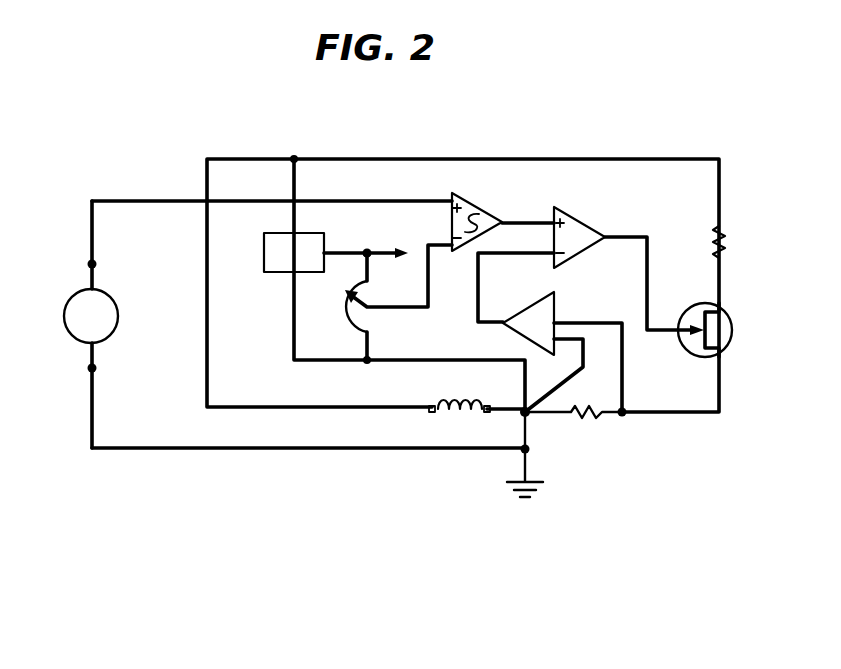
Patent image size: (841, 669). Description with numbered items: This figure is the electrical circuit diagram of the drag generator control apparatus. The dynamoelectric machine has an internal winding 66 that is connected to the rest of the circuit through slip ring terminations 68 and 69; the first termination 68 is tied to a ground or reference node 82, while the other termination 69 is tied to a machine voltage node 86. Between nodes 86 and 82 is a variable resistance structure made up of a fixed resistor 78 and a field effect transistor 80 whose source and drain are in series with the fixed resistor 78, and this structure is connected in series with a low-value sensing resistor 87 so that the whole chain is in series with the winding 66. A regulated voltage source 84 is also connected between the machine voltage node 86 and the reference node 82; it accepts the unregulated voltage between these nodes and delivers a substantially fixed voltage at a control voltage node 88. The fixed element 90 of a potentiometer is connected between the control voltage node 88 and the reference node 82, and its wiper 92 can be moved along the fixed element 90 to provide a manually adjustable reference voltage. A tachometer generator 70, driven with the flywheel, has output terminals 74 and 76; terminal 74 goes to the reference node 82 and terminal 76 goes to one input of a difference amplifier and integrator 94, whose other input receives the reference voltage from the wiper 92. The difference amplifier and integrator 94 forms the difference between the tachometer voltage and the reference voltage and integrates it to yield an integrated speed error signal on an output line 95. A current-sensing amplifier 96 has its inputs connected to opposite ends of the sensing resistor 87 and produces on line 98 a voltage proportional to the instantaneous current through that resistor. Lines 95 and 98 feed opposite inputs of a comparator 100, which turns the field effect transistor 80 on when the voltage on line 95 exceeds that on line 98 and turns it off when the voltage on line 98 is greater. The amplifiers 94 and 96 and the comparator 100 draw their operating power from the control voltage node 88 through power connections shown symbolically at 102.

The internal winding 66 is at (455, 427).
The slip ring termination 68 is at (487, 416).
The slip ring termination 69 is at (432, 413).
The tachometer generator 70 is at (64, 311).
The output terminal 74 is at (96, 368).
The output terminal 76 is at (96, 263).
The fixed resistor 78 is at (725, 229).
The field effect transistor 80 is at (732, 325).
The reference node 82 is at (529, 415).
The regulated voltage source 84 is at (266, 272).
The machine voltage node 86 is at (294, 158).
The sensing resistor 87 is at (596, 420).
The control voltage node 88 is at (366, 248).
The fixed element 90 is at (358, 291).
The wiper 92 is at (362, 310).
The difference amplifier and integrator 94 is at (478, 208).
The output line 95 is at (532, 214).
The current-sensing amplifier 96 is at (560, 312).
The line 98 is at (479, 294).
The comparator 100 is at (587, 213).
The power connections 102 is at (398, 250).